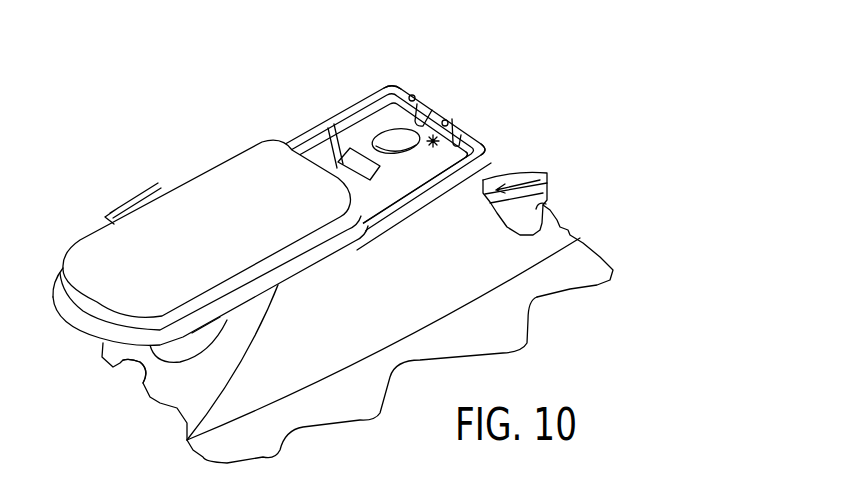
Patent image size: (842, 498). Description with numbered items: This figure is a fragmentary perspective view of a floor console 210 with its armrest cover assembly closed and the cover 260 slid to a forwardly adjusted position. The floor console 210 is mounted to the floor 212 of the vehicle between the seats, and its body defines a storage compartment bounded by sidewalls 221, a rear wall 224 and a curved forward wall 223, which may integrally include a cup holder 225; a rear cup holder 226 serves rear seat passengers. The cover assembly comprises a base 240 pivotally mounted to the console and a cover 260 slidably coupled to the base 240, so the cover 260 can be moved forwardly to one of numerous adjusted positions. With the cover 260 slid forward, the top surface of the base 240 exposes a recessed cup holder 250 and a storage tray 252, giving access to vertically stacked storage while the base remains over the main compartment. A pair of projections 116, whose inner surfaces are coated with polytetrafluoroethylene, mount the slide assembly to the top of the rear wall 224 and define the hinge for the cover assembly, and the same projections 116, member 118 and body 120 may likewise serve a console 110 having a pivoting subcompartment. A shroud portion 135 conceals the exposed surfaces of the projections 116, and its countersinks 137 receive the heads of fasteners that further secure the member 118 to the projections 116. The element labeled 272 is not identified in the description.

The console 110 is at (401, 129).
The projections 116 is at (466, 107).
The member 118 is at (430, 160).
The body 120 is at (537, 170).
The shroud portion 135 is at (413, 93).
The countersinks 137 is at (449, 100).
The floor console 210 is at (566, 198).
The floor 212 is at (503, 336).
The sidewalls 221 is at (425, 282).
The curved forward wall 223 is at (215, 325).
The rear wall 224 is at (483, 162).
The cup holder 225 is at (133, 373).
The rear cup holder 226 is at (541, 206).
The base 240 is at (468, 136).
The recessed cup holder 250 is at (391, 137).
The storage tray 252 is at (327, 130).
The cover 260 is at (210, 224).
The lid top surface 272 is at (137, 132).